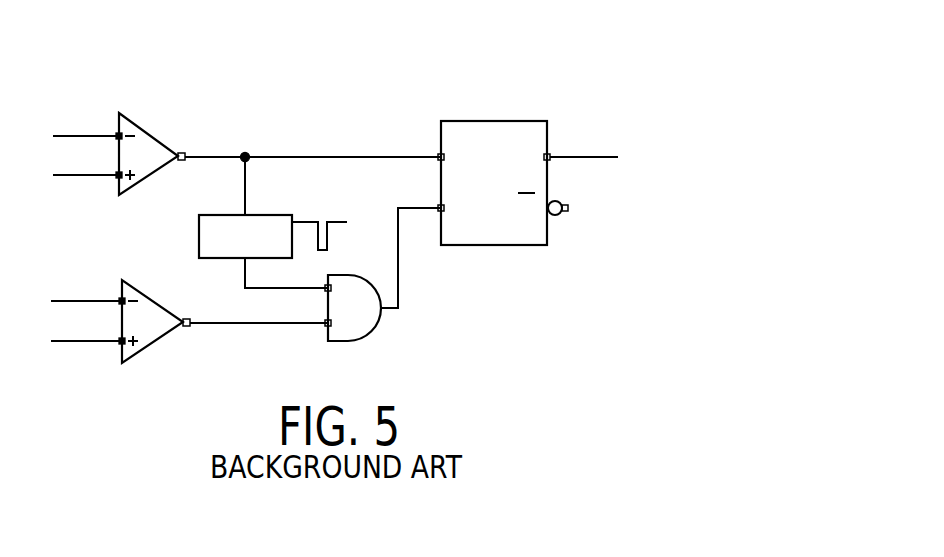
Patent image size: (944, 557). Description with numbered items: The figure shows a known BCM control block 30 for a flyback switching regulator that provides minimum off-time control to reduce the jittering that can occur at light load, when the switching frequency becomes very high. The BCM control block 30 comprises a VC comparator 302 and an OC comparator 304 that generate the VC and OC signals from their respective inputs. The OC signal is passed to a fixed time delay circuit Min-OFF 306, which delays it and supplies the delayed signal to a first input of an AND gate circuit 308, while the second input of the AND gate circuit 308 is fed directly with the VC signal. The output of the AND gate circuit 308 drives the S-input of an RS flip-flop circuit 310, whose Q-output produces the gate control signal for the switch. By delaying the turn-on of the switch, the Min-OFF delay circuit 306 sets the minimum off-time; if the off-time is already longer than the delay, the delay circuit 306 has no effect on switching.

The BCM control block 30 is at (455, 50).
The VC comparator 302 is at (143, 288).
The OC comparator 304 is at (148, 128).
The fixed time delay circuit Min-OFF 306 is at (277, 212).
The AND gate circuit 308 is at (357, 275).
The RS flip-flop circuit 310 is at (500, 247).